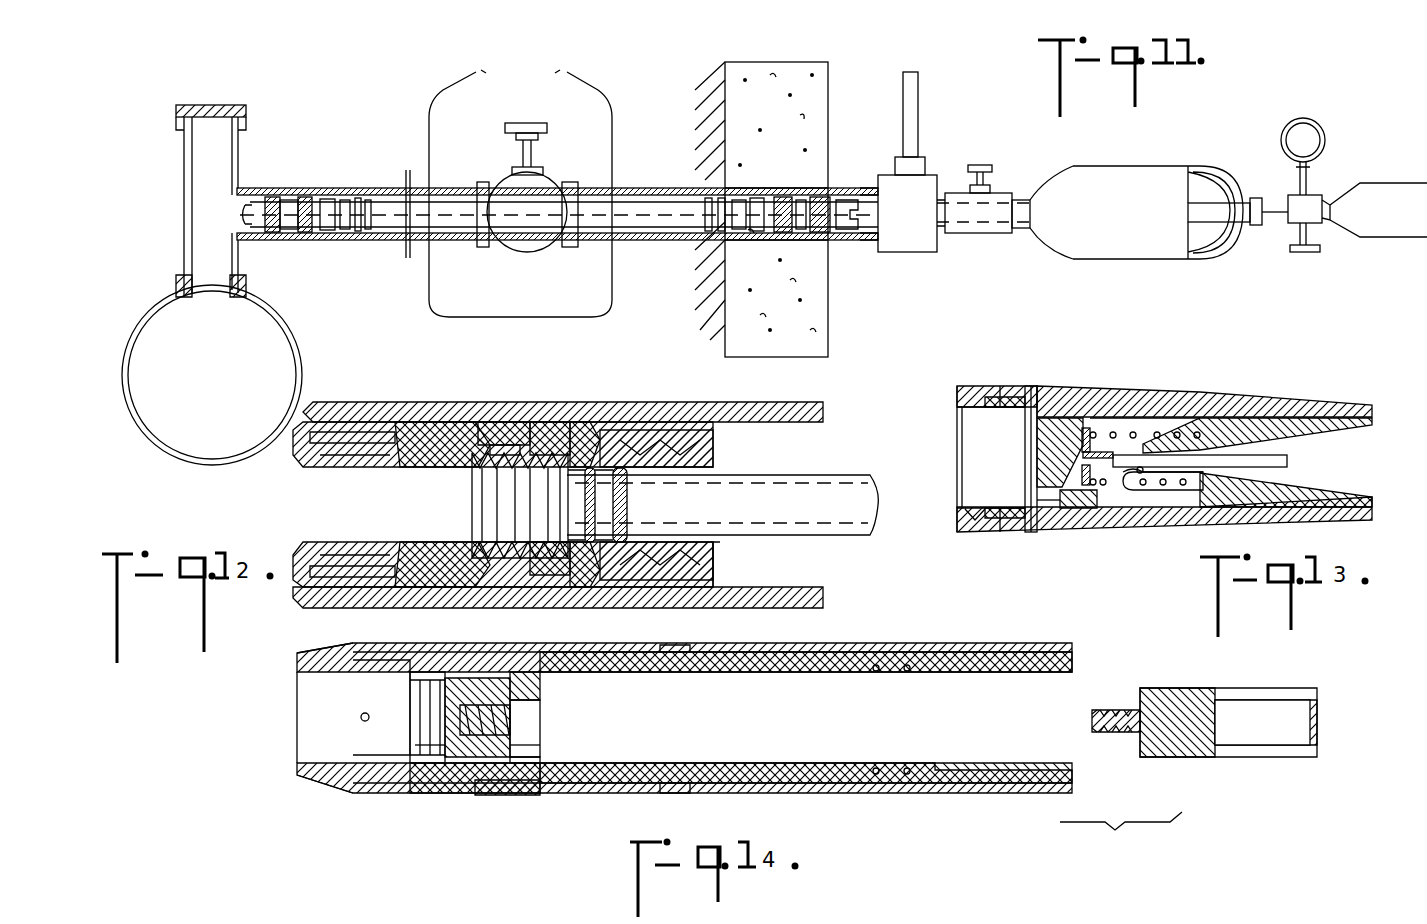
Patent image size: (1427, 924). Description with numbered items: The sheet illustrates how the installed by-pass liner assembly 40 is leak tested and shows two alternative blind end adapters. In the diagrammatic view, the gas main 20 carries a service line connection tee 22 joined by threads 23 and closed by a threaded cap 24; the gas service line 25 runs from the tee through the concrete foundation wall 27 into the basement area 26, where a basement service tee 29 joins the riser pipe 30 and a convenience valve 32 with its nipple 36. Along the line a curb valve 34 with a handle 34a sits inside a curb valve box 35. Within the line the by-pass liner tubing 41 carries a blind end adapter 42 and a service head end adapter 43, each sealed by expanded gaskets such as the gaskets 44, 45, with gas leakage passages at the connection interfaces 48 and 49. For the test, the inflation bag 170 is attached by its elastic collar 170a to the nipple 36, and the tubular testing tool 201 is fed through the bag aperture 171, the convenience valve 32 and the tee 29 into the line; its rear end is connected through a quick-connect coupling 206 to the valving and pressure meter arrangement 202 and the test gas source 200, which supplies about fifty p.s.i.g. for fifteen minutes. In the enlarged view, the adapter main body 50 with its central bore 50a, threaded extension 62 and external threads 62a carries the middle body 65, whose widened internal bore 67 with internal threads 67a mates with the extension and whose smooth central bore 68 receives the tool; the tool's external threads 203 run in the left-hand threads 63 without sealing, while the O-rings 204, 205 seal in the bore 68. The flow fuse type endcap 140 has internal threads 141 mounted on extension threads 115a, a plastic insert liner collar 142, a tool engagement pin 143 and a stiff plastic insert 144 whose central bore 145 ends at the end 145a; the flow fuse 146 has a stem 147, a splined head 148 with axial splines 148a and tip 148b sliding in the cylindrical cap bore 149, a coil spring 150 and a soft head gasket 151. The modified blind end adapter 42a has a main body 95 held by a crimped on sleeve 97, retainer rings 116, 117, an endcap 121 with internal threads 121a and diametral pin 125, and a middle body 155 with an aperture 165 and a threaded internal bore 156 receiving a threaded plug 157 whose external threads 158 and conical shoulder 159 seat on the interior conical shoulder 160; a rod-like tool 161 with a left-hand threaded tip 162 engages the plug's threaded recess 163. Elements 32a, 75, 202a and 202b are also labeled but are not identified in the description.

In FIG. 11, the gas main 20 is at (224, 366).
In FIG. 11, the service line connection tee 22 is at (238, 150).
In FIG. 11, the threads 23 is at (244, 283).
In FIG. 11, the threaded cap 24 is at (244, 107).
In FIG. 11, the gas service line 25 is at (645, 188).
In FIG. 11, the basement area 26 is at (936, 308).
In FIG. 11, the concrete foundation wall 27 is at (828, 330).
In FIG. 11, the basement service tee 29 is at (896, 252).
In FIG. 11, the riser pipe 30 is at (918, 110).
In FIG. 11, the convenience valve 32 is at (985, 233).
In FIG. 11, the valve handle 32a is at (990, 162).
In FIG. 11, the curb valve 34 is at (527, 252).
In FIG. 11, the handle 34a is at (538, 122).
In FIG. 11, the curb valve box 35 is at (486, 140).
In FIG. 11, the convenience valve nipple 36 is at (1020, 200).
In FIG. 11, the by-pass liner assembly 40 is at (411, 168).
In FIG. 11, the by-pass liner tubing 41 is at (440, 212).
In FIG. 14, the by-pass liner tubing 41 is at (1010, 793).
In FIG. 11, the blind end adapter 42 is at (325, 220).
In FIG. 14, the modified blind end adapter 42a is at (420, 798).
In FIG. 11, the service head end adapter 43 is at (700, 240).
In FIG. 14, the gasket 44 is at (470, 795).
In FIG. 14, the gasket 45 is at (590, 795).
In FIG. 11, the connection interface 48 is at (288, 205).
In FIG. 11, the connection interface 49 is at (780, 205).
In FIG. 12, the connection interface 49 is at (500, 430).
In FIG. 12, the adapter main body 50 is at (385, 465).
In FIG. 12, the central bore 50a is at (378, 545).
In FIG. 12, the threaded extension 62 is at (522, 455).
In FIG. 12, the external threads 62a is at (470, 545).
In FIG. 12, the internal left-hand coarse machine threads 63 is at (450, 470).
In FIG. 12, the middle body 65 is at (590, 430).
In FIG. 12, the widened internal bore 67 is at (560, 560).
In FIG. 12, the internal threads 67a is at (540, 560).
In FIG. 12, the smooth central bore 68 is at (720, 542).
In FIG. 12, the outer tube 75 is at (726, 444).
In FIG. 14, the main body 95 is at (670, 795).
In FIG. 14, the crimped on sleeve 97 is at (882, 795).
In FIG. 14, the external threads 115a is at (415, 685).
In FIG. 14, the steel retainer ring 116 is at (457, 655).
In FIG. 14, the steel retainer ring 117 is at (590, 652).
In FIG. 14, the endcap 121 is at (383, 795).
In FIG. 14, the internal threads 121a is at (438, 682).
In FIG. 14, the diametral pin 125 is at (360, 717).
In FIG. 13, the flow fuse type endcap 140 is at (1160, 392).
In FIG. 13, the internal threads 141 is at (980, 505).
In FIG. 13, the plastic insert liner collar 142 is at (1000, 490).
In FIG. 13, the tool engagement pin 143 is at (1027, 530).
In FIG. 13, the stiff plastic insert 144 is at (1262, 512).
In FIG. 13, the central bore 145 is at (1130, 492).
In FIG. 13, the end 145a is at (1240, 478).
In FIG. 13, the flow fuse 146 is at (1056, 505).
In FIG. 13, the stem 147 is at (1125, 455).
In FIG. 13, the head 148 is at (1058, 430).
In FIG. 13, the axial splines 148a is at (1085, 508).
In FIG. 13, the tip 148b is at (1052, 420).
In FIG. 13, the cylindrical cap bore 149 is at (1160, 494).
In FIG. 13, the coil spring 150 is at (1180, 432).
In FIG. 13, the soft head gasket 151 is at (1118, 415).
In FIG. 14, the middle body 155 is at (535, 798).
In FIG. 14, the threaded internal bore 156 is at (420, 750).
In FIG. 14, the threaded plug 157 is at (510, 706).
In FIG. 14, the external threads 158 is at (525, 692).
In FIG. 14, the conical shoulder 159 is at (525, 748).
In FIG. 14, the interior conical shoulder 160 is at (495, 800).
In FIG. 14, the rod-like tool 161 is at (1182, 757).
In FIG. 14, the left-hand threaded tip 162 is at (1105, 740).
In FIG. 14, the threaded recess 163 is at (520, 735).
In FIG. 14, the aperture 165 is at (527, 672).
In FIG. 11, the inflation bag 170 is at (1140, 172).
In FIG. 11, the elastic collar 170a is at (1040, 198).
In FIG. 11, the bag aperture 171 is at (1210, 185).
In FIG. 11, the source 200 is at (1404, 218).
In FIG. 11, the tubular testing tool 201 is at (1203, 212).
In FIG. 12, the tubular testing tool 201 is at (796, 508).
In FIG. 11, the valving and pressure meter arrangement 202 is at (1322, 200).
In FIG. 11, the valve handle 202a is at (1316, 252).
In FIG. 11, the gauge 202b is at (1324, 130).
In FIG. 12, the external threads 203 is at (485, 497).
In FIG. 12, the O-ring 204 is at (628, 497).
In FIG. 12, the O-ring 205 is at (635, 440).
In FIG. 11, the quick-connect coupling 206 is at (1262, 200).